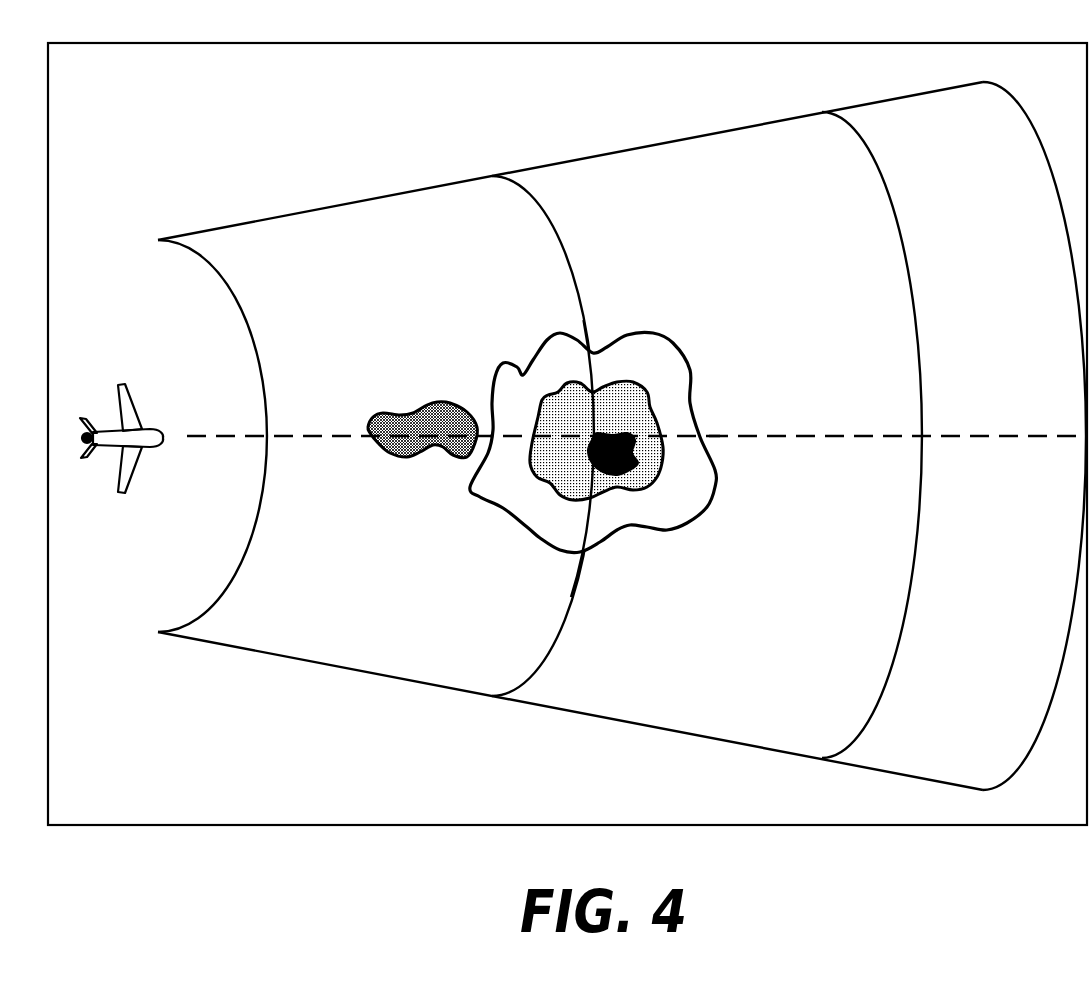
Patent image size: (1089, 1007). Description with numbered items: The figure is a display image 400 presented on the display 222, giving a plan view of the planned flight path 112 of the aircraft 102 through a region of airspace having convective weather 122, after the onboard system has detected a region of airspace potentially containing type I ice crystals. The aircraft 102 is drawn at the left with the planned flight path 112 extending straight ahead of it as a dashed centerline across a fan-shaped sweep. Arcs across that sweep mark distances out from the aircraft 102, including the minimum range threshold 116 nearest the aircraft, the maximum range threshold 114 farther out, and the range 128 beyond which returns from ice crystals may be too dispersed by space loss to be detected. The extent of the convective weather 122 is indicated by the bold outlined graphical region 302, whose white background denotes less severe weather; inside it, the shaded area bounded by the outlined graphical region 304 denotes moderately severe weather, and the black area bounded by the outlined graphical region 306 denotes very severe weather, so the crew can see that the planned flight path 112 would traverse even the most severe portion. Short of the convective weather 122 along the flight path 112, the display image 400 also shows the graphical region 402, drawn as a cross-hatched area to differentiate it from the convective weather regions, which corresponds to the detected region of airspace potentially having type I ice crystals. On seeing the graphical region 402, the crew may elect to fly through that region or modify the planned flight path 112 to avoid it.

The aircraft 102 is at (122, 506).
The planned flight path 112 is at (280, 436).
The maximum range threshold 114 is at (598, 246).
The minimum range threshold 116 is at (257, 268).
The convective weather 122 is at (728, 374).
The range 128 is at (917, 168).
The display 222 is at (362, 825).
The outlined graphical region 302 is at (528, 538).
The outlined graphical region 304 is at (647, 487).
The outlined graphical region 306 is at (633, 432).
The display image 400 is at (983, 856).
The graphical region 402 is at (390, 457).